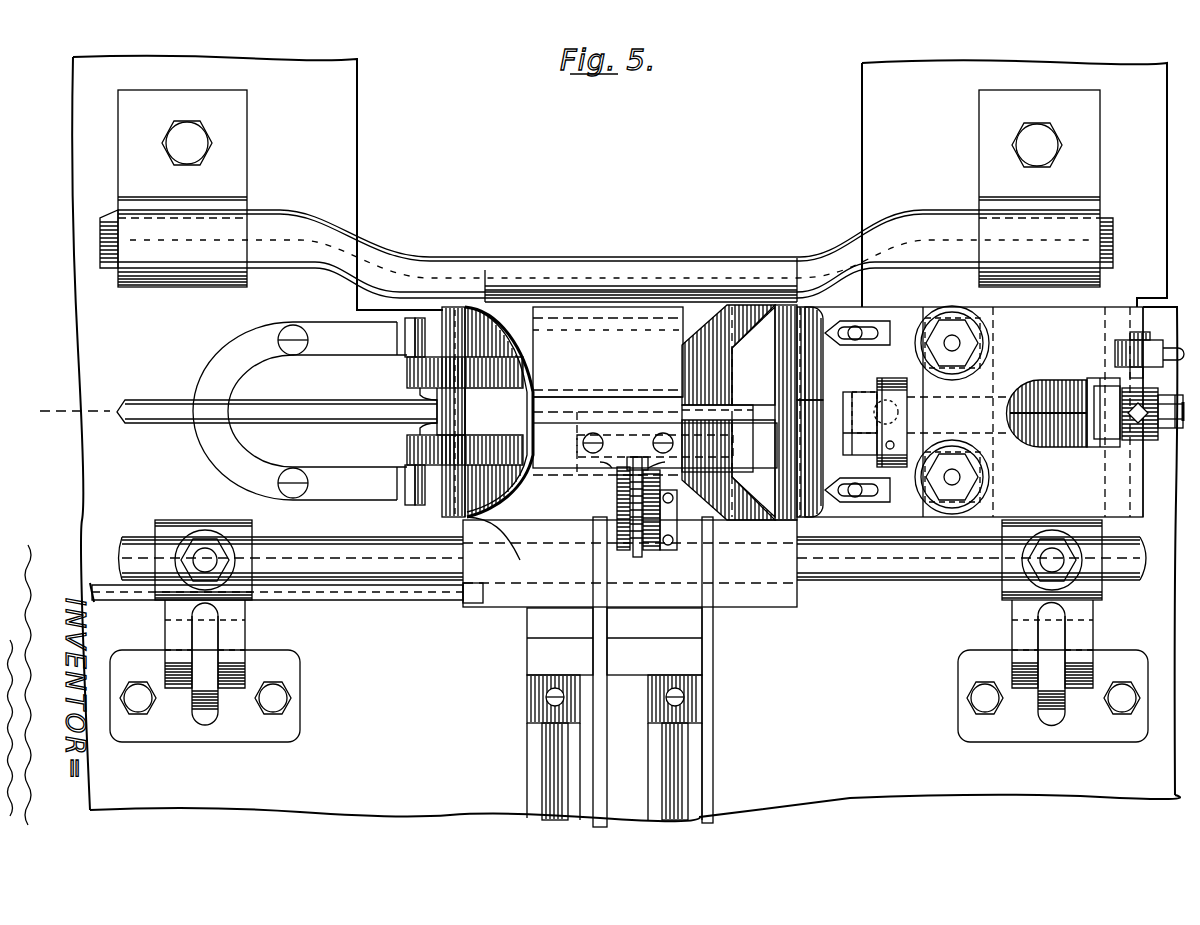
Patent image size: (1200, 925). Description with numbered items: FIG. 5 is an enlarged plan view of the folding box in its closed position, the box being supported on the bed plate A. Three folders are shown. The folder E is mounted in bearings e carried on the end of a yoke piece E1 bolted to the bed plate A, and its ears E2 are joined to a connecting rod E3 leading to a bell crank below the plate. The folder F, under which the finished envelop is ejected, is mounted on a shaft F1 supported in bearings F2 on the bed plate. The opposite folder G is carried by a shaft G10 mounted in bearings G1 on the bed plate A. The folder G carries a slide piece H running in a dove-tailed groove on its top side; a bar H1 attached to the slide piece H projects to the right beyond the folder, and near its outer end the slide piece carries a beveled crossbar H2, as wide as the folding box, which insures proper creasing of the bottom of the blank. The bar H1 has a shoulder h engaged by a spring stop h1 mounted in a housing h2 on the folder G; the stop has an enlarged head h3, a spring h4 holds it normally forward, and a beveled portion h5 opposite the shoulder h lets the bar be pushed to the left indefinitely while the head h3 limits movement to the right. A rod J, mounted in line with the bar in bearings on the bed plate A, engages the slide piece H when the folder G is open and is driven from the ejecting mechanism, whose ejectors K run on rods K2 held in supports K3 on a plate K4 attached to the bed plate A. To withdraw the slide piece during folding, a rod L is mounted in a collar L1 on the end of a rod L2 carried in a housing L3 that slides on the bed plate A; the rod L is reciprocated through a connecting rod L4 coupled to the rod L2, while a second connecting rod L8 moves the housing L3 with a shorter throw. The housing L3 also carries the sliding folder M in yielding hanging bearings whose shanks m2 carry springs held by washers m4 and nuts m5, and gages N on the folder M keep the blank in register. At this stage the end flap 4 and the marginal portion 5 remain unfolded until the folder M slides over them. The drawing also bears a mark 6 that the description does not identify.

The bed plate A is at (626, 439).
The bearings F2 is at (230, 216).
The shaft F1 is at (297, 220).
The yoke piece E1 is at (262, 476).
The connecting rod E3 is at (345, 402).
The ears E2 is at (435, 368).
The bearings e is at (420, 498).
The folder E is at (487, 412).
The folder F is at (608, 391).
The beveled crossbar H2 is at (754, 412).
The slide piece H is at (715, 412).
The bar H1 is at (655, 445).
The shoulder h is at (600, 458).
The head h3 is at (637, 458).
The beveled portion h5 is at (657, 460).
The spring stop h1 is at (617, 490).
The housing h2 is at (643, 497).
The spring h4 is at (670, 500).
The folder G is at (483, 558).
The shaft G10 is at (857, 578).
The rod J is at (436, 600).
The bearings G1 is at (247, 625).
The ejectors K is at (604, 662).
The plate K4 is at (527, 654).
The supports K3 is at (527, 700).
The rods K2 is at (550, 772).
The sliding folder M is at (875, 312).
The end flap 4 is at (812, 322).
The portion of the bottom of the tubular portion 5 is at (806, 510).
The gages N is at (888, 335).
The nut m5 is at (962, 338).
The shanks m2 is at (962, 344).
The washer m4 is at (970, 355).
The rod L is at (852, 402).
The collar L1 is at (882, 386).
The housing L3 is at (1030, 358).
The rod L2 is at (1102, 420).
The connecting rod L4 is at (1166, 348).
The second connecting rod L8 is at (1152, 438).
The pin 6 is at (1163, 430).